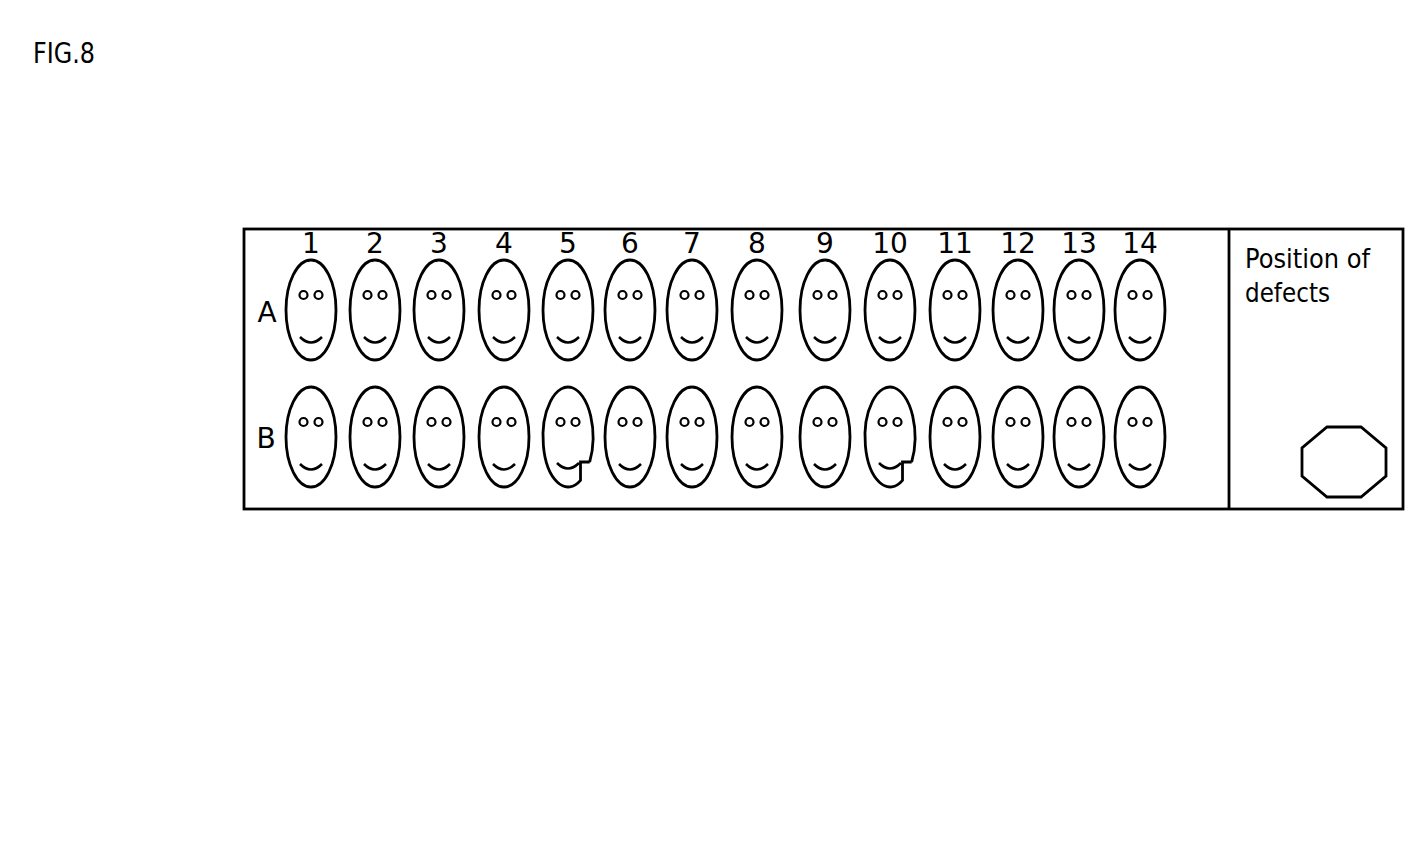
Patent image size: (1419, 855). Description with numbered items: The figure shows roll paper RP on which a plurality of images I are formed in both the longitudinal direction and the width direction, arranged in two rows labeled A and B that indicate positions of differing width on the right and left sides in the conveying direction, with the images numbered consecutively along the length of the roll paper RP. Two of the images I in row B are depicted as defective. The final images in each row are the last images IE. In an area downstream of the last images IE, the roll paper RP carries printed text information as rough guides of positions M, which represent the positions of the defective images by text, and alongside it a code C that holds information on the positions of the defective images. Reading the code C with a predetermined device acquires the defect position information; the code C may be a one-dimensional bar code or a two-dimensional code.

The images I is at (296, 268).
The last images IE is at (1158, 277).
The roll paper RP is at (928, 509).
The rough guides of positions M is at (1290, 393).
The code C is at (1340, 498).